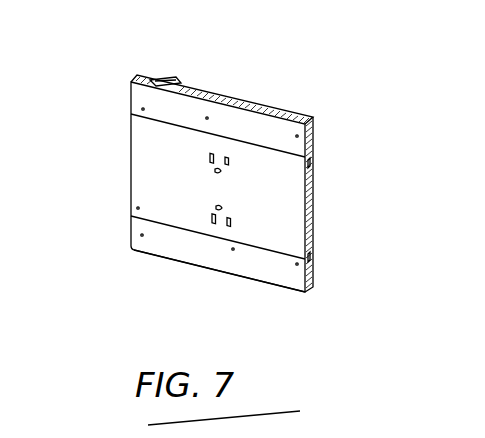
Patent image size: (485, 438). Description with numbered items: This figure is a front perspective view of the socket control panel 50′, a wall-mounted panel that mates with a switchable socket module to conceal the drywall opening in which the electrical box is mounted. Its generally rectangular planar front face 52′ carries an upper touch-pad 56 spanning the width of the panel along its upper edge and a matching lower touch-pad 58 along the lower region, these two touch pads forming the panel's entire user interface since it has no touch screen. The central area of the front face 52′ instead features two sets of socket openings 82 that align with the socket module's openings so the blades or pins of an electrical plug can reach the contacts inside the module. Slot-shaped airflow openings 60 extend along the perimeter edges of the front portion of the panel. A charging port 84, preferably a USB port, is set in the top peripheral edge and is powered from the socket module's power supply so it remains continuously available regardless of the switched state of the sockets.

The socket control panel 50′ is at (291, 90).
The front face 52′ is at (192, 248).
The upper touch-pad 56 is at (150, 103).
The lower touch-pad 58 is at (272, 273).
The airflow openings 60 is at (248, 103).
The socket openings 82 is at (205, 208).
The charging port 84 is at (158, 77).